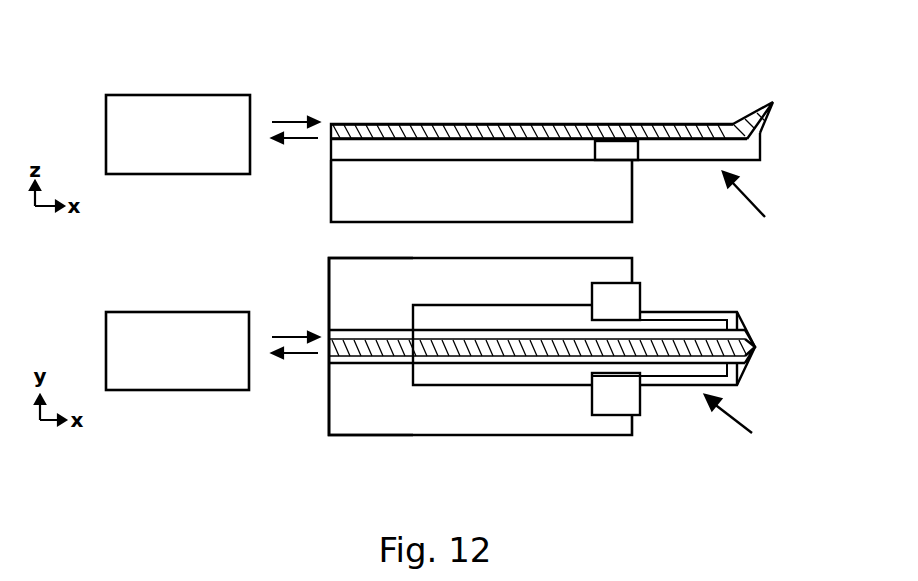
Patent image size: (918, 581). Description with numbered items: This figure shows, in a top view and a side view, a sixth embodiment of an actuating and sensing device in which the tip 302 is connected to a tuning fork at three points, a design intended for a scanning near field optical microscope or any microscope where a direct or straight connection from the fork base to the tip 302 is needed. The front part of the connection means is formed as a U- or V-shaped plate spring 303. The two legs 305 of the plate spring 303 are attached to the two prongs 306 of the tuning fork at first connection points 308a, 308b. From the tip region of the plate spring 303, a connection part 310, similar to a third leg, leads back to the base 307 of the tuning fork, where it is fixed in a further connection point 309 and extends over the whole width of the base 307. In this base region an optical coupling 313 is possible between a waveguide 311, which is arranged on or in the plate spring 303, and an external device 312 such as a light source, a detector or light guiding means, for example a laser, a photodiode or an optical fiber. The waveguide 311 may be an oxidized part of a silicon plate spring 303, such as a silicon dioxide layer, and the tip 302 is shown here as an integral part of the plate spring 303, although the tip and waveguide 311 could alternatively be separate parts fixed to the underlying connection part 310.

The tip 302 is at (755, 134).
The plate spring 303 is at (768, 313).
The legs 305 is at (667, 317).
The prongs 306 is at (522, 271).
The base 307 is at (377, 318).
The first connection point 308a is at (618, 293).
The first connection point 308b is at (615, 397).
The further connection point 309 is at (340, 146).
The connection part 310 is at (540, 148).
The waveguide 311 is at (437, 127).
The external device 312 is at (207, 155).
The optical coupling 313 is at (293, 105).